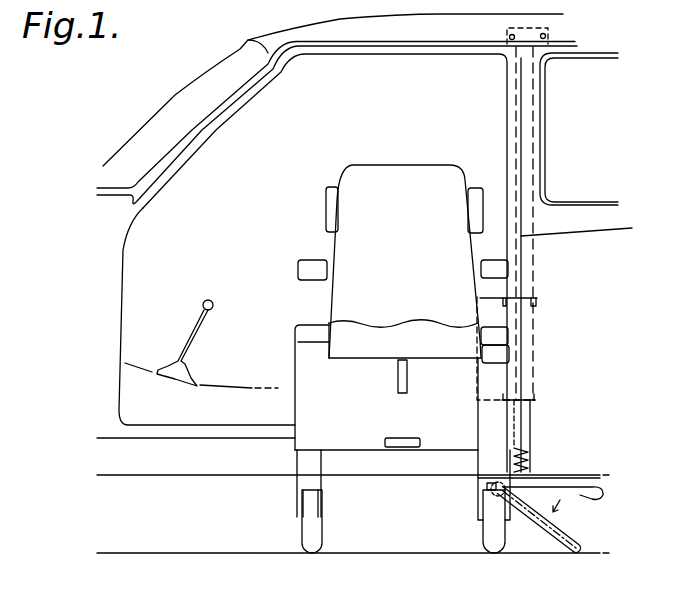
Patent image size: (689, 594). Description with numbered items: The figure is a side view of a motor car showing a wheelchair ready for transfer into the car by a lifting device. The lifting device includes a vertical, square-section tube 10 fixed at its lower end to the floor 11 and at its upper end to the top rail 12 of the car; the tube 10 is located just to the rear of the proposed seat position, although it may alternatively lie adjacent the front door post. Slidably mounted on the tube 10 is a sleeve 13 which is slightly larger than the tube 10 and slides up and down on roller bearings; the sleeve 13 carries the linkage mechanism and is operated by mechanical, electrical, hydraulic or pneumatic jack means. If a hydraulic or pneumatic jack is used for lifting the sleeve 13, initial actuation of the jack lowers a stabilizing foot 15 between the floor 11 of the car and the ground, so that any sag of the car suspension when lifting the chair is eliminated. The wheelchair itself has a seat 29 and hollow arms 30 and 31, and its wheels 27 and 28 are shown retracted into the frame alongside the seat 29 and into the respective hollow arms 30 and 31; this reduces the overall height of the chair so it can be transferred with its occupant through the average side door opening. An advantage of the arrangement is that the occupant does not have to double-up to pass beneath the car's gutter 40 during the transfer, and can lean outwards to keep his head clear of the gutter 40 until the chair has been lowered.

The vertical square-section tube 10 is at (528, 258).
The floor 11 is at (557, 472).
The top rail 12 is at (555, 34).
The sleeve 13 is at (527, 330).
The stabilizing foot 15 is at (580, 485).
The wheel 27 is at (492, 528).
The wheel 28 is at (310, 530).
The seat 29 is at (340, 330).
The hollow arm 30 is at (320, 392).
The hollow arm 31 is at (495, 423).
The gutter 40 is at (390, 57).